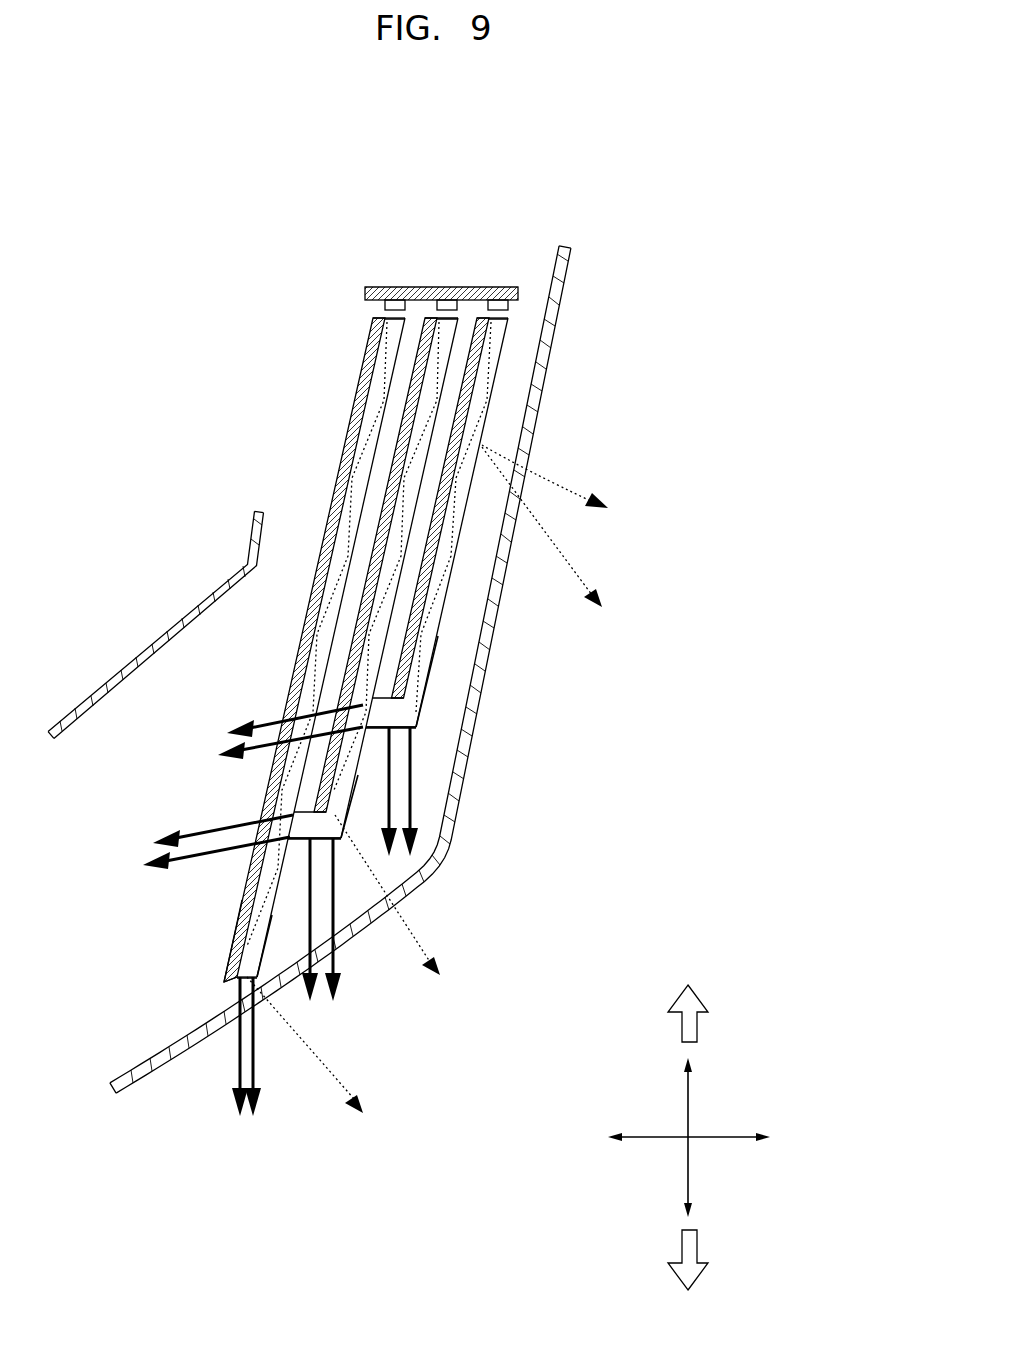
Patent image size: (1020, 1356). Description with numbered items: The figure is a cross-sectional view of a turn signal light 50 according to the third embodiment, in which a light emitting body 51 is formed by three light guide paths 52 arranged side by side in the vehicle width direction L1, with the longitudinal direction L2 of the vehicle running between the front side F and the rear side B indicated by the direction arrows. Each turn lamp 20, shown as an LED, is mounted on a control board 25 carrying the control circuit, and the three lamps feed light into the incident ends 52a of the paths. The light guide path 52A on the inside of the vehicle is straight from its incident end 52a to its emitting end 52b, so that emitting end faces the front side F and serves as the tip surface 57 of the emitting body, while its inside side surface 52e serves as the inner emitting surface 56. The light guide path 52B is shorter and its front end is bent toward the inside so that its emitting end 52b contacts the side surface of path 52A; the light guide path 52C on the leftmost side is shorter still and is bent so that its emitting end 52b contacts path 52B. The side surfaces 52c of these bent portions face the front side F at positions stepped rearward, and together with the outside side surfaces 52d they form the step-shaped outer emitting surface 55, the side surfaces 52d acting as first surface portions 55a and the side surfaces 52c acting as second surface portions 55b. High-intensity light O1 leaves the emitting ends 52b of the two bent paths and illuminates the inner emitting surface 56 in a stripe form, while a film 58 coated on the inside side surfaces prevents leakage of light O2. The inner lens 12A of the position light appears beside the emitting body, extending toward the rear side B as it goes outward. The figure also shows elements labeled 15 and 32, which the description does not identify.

The turn signal light 50 is at (300, 200).
The control board 25 is at (378, 288).
The turn lamp 20 is at (506, 300).
The incident end 52a is at (385, 313).
The panel 15 is at (568, 278).
The light emitting body 51 is at (327, 650).
The light guide path 52 is at (352, 650).
The light guide path 52A is at (314, 650).
The light guide path 52B is at (373, 578).
The light guide path 52C is at (463, 457).
The film 58 is at (430, 542).
The inner lens 12A is at (149, 645).
The emitting end 52b is at (280, 896).
The tip surface 57 is at (247, 977).
The side surface 52d is at (486, 806).
The first surface portion 55a is at (273, 915).
The side surface 52c is at (501, 784).
The second surface portion 55b is at (345, 840).
The outer emitting surface 55 is at (516, 806).
The side surface 52e is at (166, 941).
The inner emitting surface 56 is at (247, 900).
The lower end 32 is at (225, 985).
The light O1 is at (236, 1080).
The light O2 is at (337, 1093).
The rear side B is at (700, 1020).
The front side F is at (700, 1252).
The vehicle width direction L1 is at (748, 1145).
The longitudinal direction L2 is at (695, 1100).